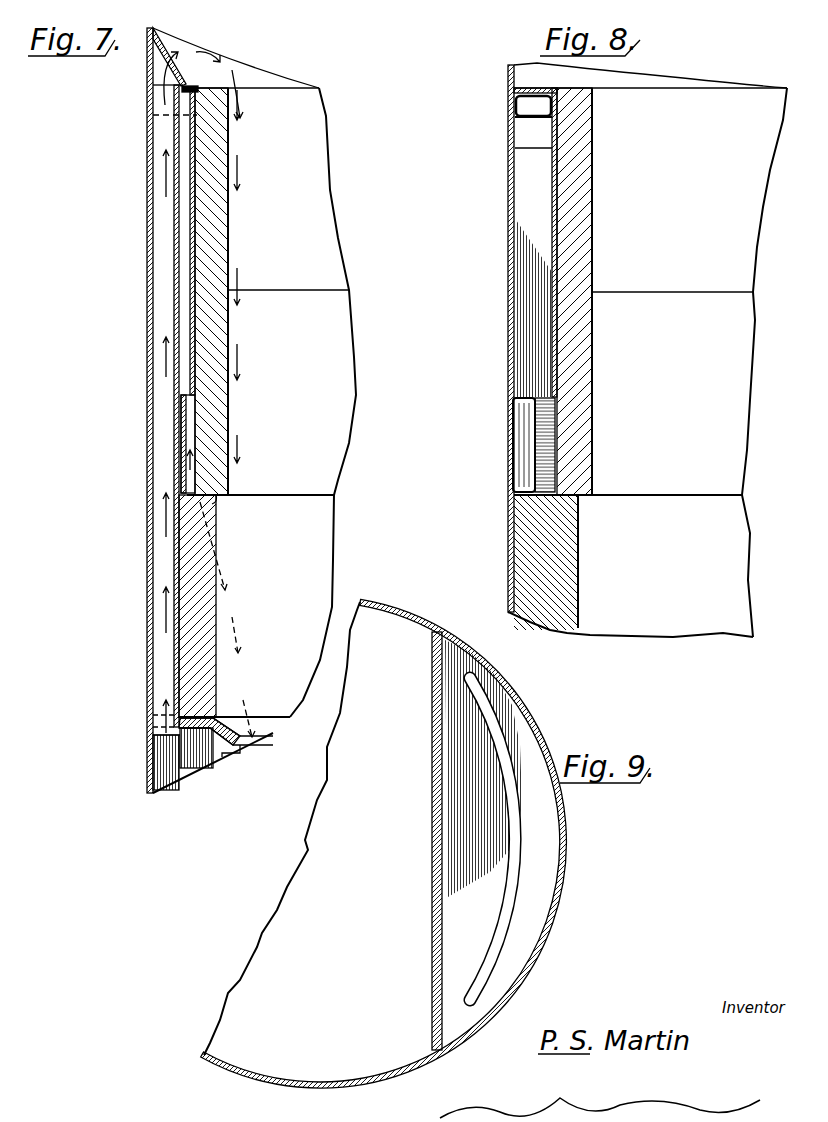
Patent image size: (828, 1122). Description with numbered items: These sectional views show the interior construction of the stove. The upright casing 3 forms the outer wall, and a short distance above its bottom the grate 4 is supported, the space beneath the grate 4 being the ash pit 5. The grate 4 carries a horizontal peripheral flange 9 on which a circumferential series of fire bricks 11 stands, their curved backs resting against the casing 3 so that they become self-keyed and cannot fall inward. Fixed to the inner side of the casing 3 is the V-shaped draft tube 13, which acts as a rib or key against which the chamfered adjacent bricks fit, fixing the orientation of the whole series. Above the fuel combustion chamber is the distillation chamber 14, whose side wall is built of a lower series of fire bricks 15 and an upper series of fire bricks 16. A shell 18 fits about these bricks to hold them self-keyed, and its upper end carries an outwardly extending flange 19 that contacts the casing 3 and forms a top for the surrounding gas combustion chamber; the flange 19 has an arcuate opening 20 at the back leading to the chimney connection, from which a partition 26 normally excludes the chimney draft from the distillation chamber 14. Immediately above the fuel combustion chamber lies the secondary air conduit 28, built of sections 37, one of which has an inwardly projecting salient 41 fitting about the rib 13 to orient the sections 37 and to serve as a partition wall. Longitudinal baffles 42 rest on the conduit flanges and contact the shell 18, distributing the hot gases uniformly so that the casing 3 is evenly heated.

In FIG. 7, the upright casing 3 is at (147, 242).
In FIG. 8, the upright casing 3 is at (510, 527).
In FIG. 9, the upright casing 3 is at (523, 699).
In FIG. 7, the grate 4 is at (222, 738).
In FIG. 7, the ash pit 5 is at (173, 773).
In FIG. 7, the horizontal peripheral flange 9 is at (152, 735).
In FIG. 7, the fire bricks 11 is at (187, 617).
In FIG. 8, the fire bricks 11 is at (527, 560).
In FIG. 7, the draft tube 13 is at (172, 362).
In FIG. 7, the distillation chamber 14 is at (287, 209).
In FIG. 8, the distillation chamber 14 is at (608, 263).
In FIG. 7, the fire bricks of lower series 15 is at (217, 471).
In FIG. 8, the fire bricks of lower series 15 is at (567, 372).
In FIG. 7, the fire bricks of upper series 16 is at (222, 203).
In FIG. 8, the fire bricks of upper series 16 is at (582, 175).
In FIG. 7, the shell 18 is at (197, 263).
In FIG. 8, the shell 18 is at (553, 207).
In FIG. 8, the outwardly extending flange 19 is at (540, 91).
In FIG. 9, the arcuate opening 20 is at (540, 838).
In FIG. 9, the partition 26 is at (443, 855).
In FIG. 8, the secondary air conduit 28 is at (522, 455).
In FIG. 8, the conduit section 37 is at (550, 425).
In FIG. 7, the inwardly projecting salient 41 is at (187, 422).
In FIG. 8, the longitudinal baffles 42 is at (522, 222).